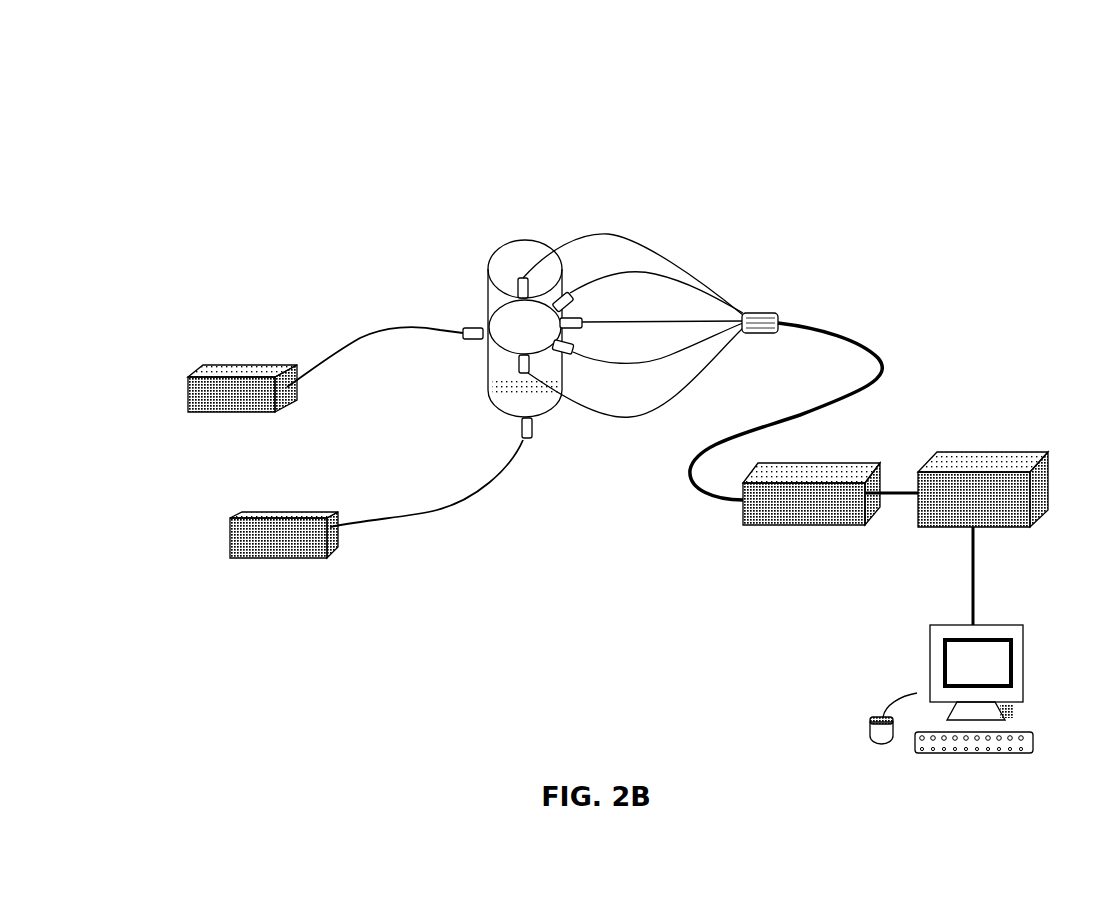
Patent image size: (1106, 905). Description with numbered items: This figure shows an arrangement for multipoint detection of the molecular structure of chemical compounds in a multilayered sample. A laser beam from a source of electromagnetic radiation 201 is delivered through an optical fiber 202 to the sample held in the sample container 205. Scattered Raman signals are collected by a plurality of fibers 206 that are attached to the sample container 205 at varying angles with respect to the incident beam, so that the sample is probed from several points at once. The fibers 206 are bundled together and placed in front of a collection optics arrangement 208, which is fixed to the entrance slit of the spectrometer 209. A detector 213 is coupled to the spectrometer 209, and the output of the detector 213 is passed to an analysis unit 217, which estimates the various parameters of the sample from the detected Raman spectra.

The source of electromagnetic radiation 201 is at (277, 390).
The optical fiber 202 is at (416, 320).
The sample container 205 is at (487, 273).
The collection fibers 206 is at (602, 363).
The collection optics arrangement 208 is at (760, 310).
The spectrometer 209 is at (810, 525).
The detector 213 is at (955, 453).
The analysis unit 217 is at (960, 752).